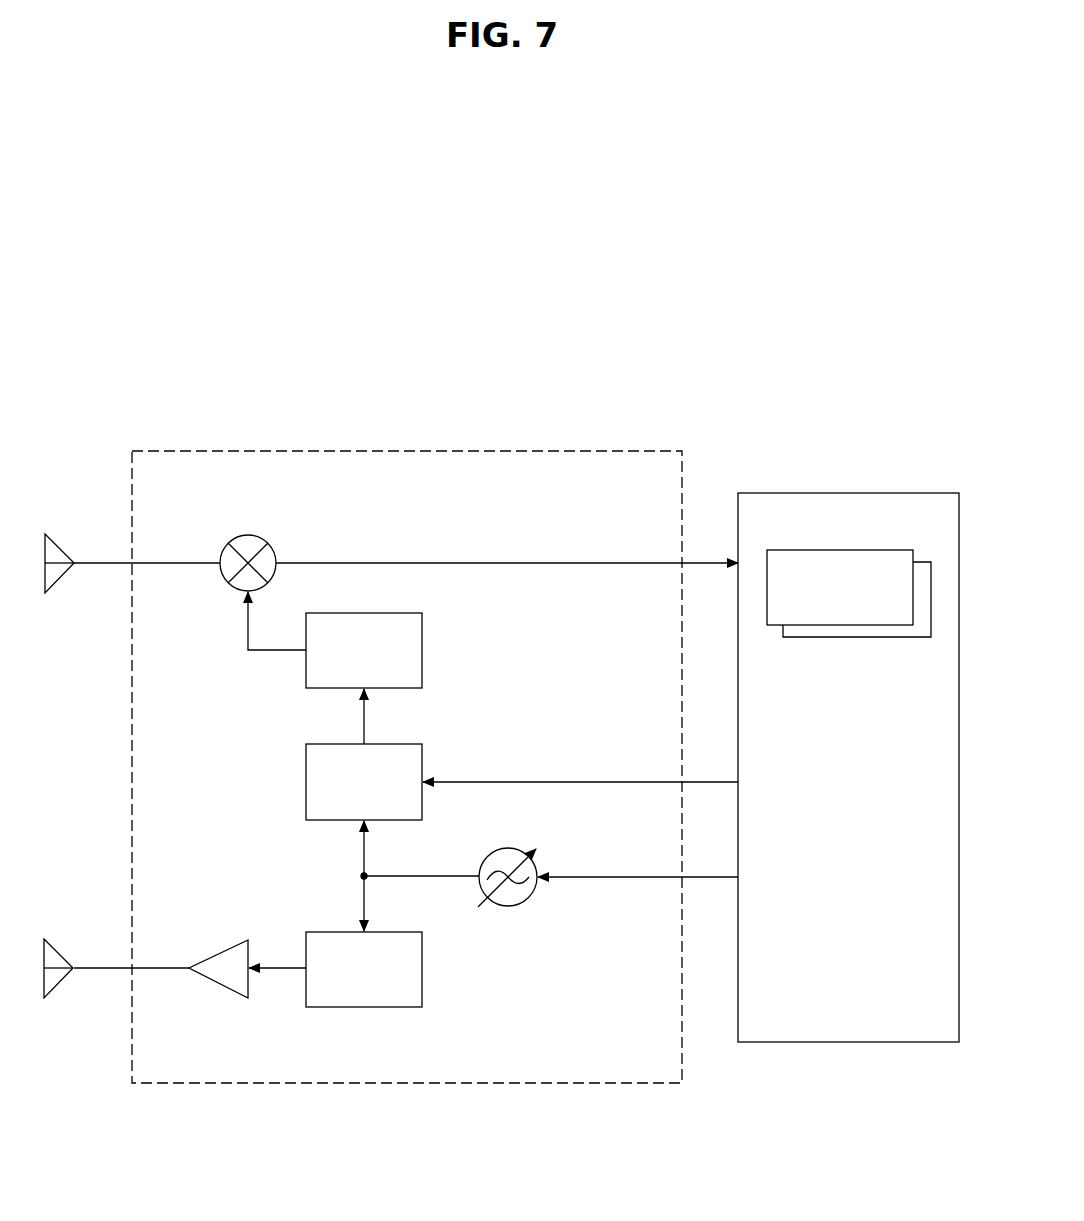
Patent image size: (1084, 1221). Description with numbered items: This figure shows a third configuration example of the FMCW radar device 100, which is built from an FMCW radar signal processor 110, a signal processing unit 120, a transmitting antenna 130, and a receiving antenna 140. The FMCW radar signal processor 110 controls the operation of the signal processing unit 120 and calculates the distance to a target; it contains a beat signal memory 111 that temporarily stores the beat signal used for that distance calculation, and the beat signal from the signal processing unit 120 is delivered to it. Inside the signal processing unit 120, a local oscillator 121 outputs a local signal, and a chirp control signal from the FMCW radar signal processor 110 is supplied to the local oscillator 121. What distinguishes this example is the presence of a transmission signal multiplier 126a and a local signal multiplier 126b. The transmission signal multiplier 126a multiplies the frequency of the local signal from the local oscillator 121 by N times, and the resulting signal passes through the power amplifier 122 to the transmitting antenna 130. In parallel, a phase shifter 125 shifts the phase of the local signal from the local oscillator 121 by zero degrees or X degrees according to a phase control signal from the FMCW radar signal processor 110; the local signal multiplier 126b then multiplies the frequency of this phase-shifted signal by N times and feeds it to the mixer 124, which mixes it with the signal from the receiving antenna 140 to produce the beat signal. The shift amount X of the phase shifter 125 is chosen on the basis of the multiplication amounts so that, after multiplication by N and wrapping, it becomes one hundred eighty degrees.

The FMCW radar device 100 is at (708, 364).
The FMCW radar signal processor 110 is at (898, 492).
The beat signal memory 111 is at (857, 549).
The signal processing unit 120 is at (565, 450).
The local oscillator 121 is at (507, 907).
The power amplifier 122 is at (230, 992).
The mixer 124 is at (248, 534).
The phase shifter 125 is at (390, 742).
The transmission signal multiplier 126a is at (392, 931).
The local signal multiplier 126b is at (424, 636).
The transmitting antenna 130 is at (62, 992).
The receiving antenna 140 is at (60, 540).